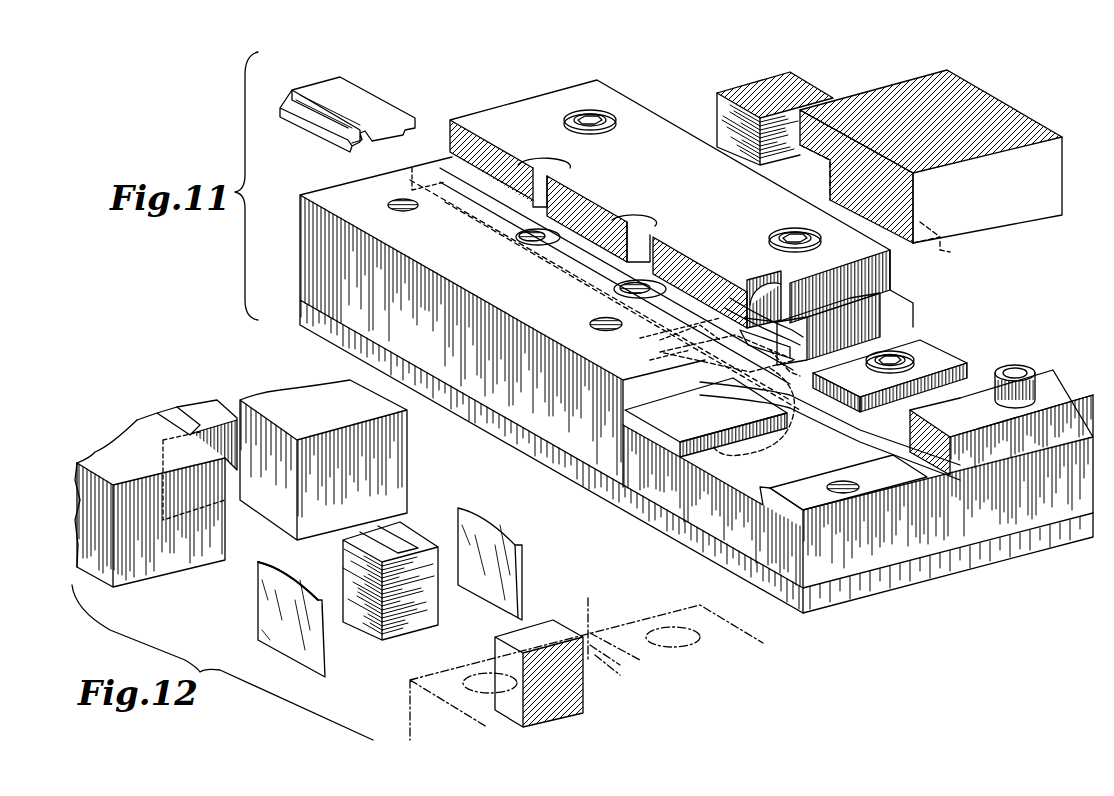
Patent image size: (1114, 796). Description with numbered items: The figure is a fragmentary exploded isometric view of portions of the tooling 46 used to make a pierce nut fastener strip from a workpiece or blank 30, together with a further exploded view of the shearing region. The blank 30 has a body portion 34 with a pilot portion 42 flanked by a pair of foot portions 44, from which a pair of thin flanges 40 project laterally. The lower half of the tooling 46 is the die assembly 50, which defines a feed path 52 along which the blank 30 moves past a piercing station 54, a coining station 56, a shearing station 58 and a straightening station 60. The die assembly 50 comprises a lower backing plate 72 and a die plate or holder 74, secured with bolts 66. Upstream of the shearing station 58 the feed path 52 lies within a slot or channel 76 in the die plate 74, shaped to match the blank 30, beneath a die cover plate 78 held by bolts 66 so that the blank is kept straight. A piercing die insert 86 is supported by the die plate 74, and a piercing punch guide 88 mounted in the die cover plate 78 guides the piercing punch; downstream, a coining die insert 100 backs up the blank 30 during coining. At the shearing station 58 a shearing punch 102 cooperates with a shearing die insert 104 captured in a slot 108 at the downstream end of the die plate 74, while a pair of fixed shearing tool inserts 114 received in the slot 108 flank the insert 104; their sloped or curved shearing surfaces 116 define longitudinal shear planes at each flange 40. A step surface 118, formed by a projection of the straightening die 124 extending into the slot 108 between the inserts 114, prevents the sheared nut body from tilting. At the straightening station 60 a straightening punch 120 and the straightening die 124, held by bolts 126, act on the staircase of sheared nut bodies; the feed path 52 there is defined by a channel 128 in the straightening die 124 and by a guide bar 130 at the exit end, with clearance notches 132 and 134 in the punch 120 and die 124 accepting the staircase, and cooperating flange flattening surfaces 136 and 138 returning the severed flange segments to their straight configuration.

In FIG. 11, the workpiece or blank 30 is at (322, 67).
In FIG. 11, the body portion 34 is at (350, 85).
In FIG. 11, the flanges 40 is at (418, 120).
In FIG. 11, the pilot portion 42 is at (390, 145).
In FIG. 11, the foot portions 44 is at (420, 132).
In FIG. 11, the tooling 46 is at (1053, 285).
In FIG. 11, the die assembly 50 is at (300, 233).
In FIG. 11, the feed path 52 is at (565, 255).
In FIG. 12, the feed path 52 is at (228, 405).
In FIG. 11, the piercing station 54 is at (584, 175).
In FIG. 11, the coining station 56 is at (681, 226).
In FIG. 11, the shearing station 58 is at (752, 257).
In FIG. 11, the straightening station 60 is at (992, 344).
In FIG. 11, the bolts 66 is at (390, 205).
In FIG. 11, the lower backing plate 72 is at (1068, 545).
In FIG. 11, the die plate or holder 74 is at (300, 262).
In FIG. 12, the die plate or holder 74 is at (105, 432).
In FIG. 11, the slot or channel 76 is at (460, 175).
In FIG. 12, the slot or channel 76 is at (170, 408).
In FIG. 11, the die cover plate 78 is at (510, 105).
In FIG. 11, the piercing die insert 86 is at (520, 232).
In FIG. 11, the piercing punch guide 88 is at (552, 150).
In FIG. 11, the coining die insert 100 is at (615, 282).
In FIG. 11, the shearing punch 102 is at (750, 76).
In FIG. 11, the shearing die insert 104 is at (720, 350).
In FIG. 12, the shearing die insert 104 is at (412, 635).
In FIG. 11, the slot 108 is at (720, 328).
In FIG. 12, the slot 108 is at (267, 512).
In FIG. 11, the shearing tool inserts 114 is at (786, 285).
In FIG. 12, the shearing tool inserts 114 is at (258, 603).
In FIG. 11, the sloped or curved shearing surfaces 116 is at (792, 334).
In FIG. 12, the sloped or curved shearing surfaces 116 is at (318, 592).
In FIG. 11, the step surface 118 is at (818, 362).
In FIG. 12, the step surface 118 is at (538, 622).
In FIG. 11, the straightening punch 120 is at (1050, 158).
In FIG. 11, the straightening die 124 is at (790, 565).
In FIG. 12, the straightening die 124 is at (408, 695).
In FIG. 11, the bolts 126 is at (905, 362).
In FIG. 11, the channel 128 is at (860, 440).
In FIG. 11, the guide bar 130 is at (1068, 382).
In FIG. 11, the clearance notch 132 is at (825, 175).
In FIG. 11, the clearance notch 134 is at (788, 422).
In FIG. 12, the clearance notch 134 is at (588, 612).
In FIG. 11, the flange flattening surface 136 is at (930, 245).
In FIG. 11, the flange flattening surface 138 is at (812, 440).